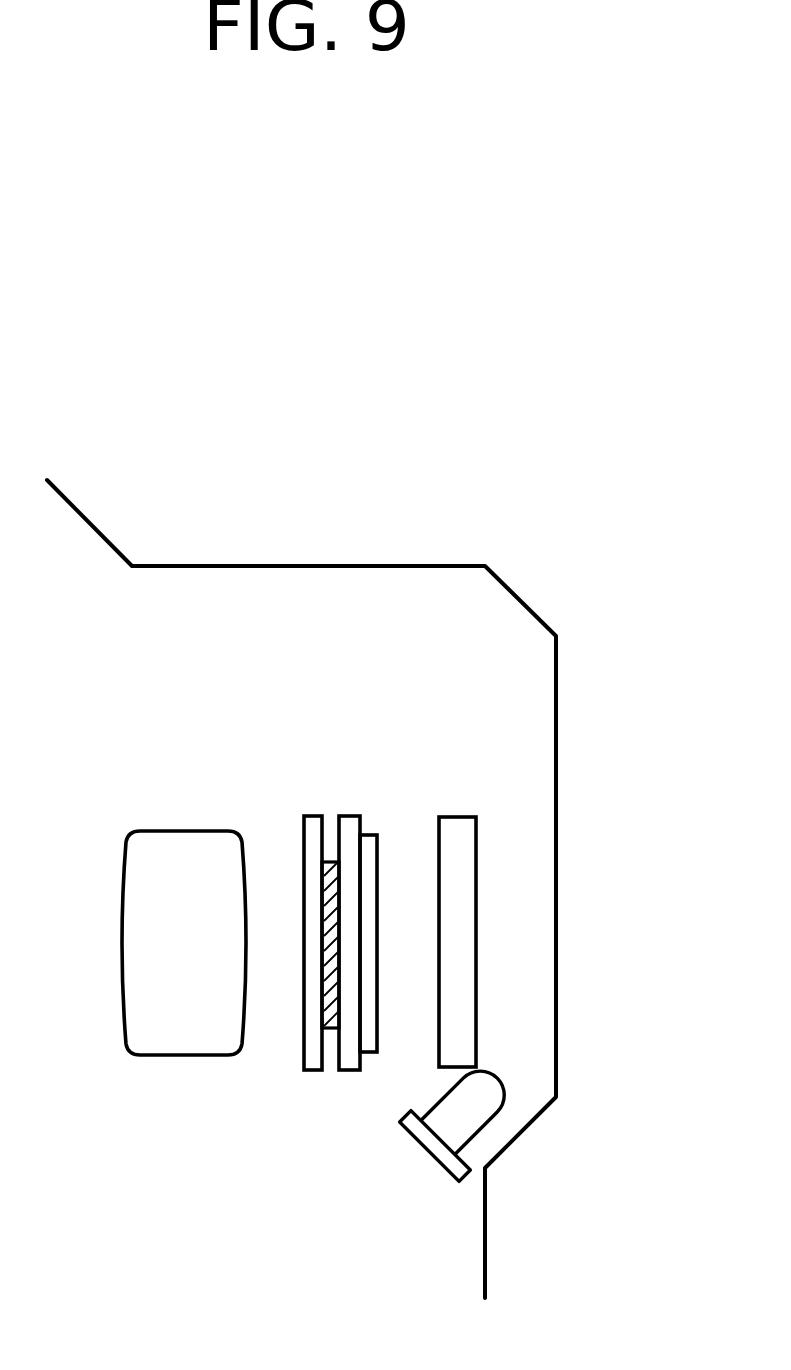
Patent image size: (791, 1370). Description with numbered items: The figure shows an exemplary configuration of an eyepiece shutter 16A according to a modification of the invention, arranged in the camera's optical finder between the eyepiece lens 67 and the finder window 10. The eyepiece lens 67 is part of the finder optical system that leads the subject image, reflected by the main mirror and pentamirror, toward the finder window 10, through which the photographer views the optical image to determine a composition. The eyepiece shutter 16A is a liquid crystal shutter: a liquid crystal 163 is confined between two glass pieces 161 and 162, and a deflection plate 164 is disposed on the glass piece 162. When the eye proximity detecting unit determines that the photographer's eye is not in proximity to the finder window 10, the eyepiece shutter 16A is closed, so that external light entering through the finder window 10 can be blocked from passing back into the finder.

The finder window 10 is at (503, 942).
The eyepiece shutter 16A is at (298, 963).
The eyepiece lens 67 is at (175, 1056).
The glass piece 161 is at (313, 1072).
The glass piece 162 is at (350, 1072).
The liquid crystal 163 is at (331, 860).
The deflection plate 164 is at (367, 834).